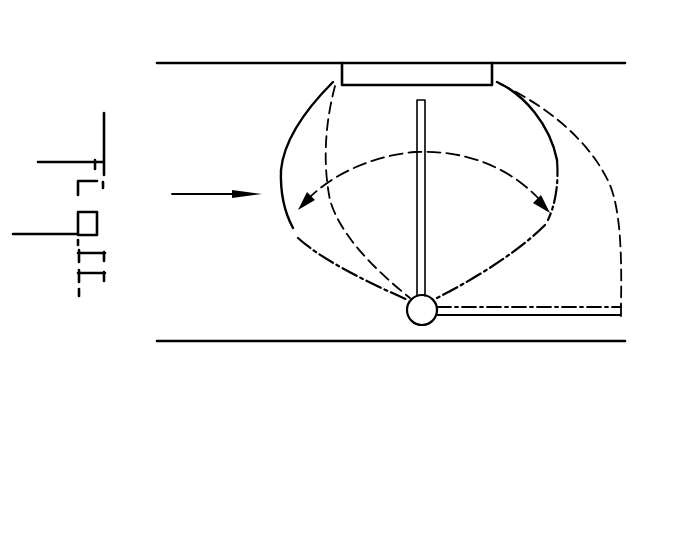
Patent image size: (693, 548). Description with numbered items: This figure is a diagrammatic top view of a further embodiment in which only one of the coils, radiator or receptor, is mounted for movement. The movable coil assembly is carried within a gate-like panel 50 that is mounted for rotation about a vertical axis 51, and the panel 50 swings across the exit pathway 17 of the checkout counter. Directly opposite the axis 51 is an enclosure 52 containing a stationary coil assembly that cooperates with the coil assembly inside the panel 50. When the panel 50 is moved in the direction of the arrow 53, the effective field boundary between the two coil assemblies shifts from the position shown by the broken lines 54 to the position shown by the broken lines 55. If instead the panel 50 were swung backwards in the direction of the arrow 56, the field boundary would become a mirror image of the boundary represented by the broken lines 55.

The exit pathway 17 is at (205, 194).
The gate-like panel 50 is at (428, 214).
The vertical axis 51 is at (417, 318).
The enclosure 52 is at (484, 77).
The arrow 53 is at (503, 173).
The broken lines 54 is at (291, 216).
The broken lines 55 is at (324, 142).
The arrow 56 is at (366, 161).